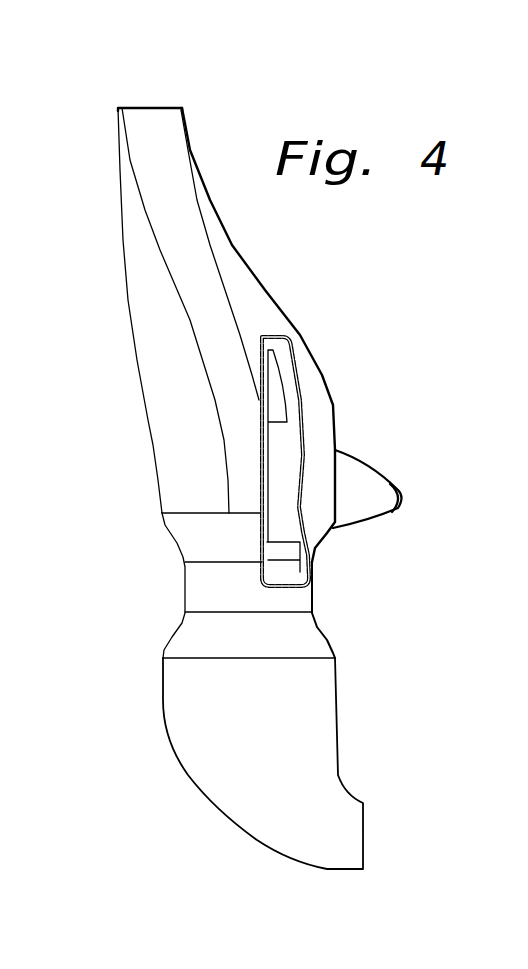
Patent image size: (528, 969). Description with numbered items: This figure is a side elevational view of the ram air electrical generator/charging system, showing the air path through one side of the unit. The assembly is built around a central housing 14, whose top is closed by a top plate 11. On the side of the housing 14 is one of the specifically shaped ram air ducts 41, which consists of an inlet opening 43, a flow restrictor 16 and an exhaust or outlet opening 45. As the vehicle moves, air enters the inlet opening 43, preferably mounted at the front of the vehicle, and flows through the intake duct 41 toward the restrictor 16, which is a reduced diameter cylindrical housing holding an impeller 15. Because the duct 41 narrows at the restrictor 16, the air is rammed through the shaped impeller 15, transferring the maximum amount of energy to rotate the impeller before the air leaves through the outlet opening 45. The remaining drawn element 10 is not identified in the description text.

The turbine blade 10 is at (365, 398).
The top plate 11 is at (362, 472).
The central housing 14 is at (425, 491).
The impeller 15 is at (293, 572).
The flow restrictor 16 is at (190, 587).
The ram air duct 41 is at (118, 370).
The inlet opening 43 is at (157, 108).
The outlet opening 45 is at (365, 838).